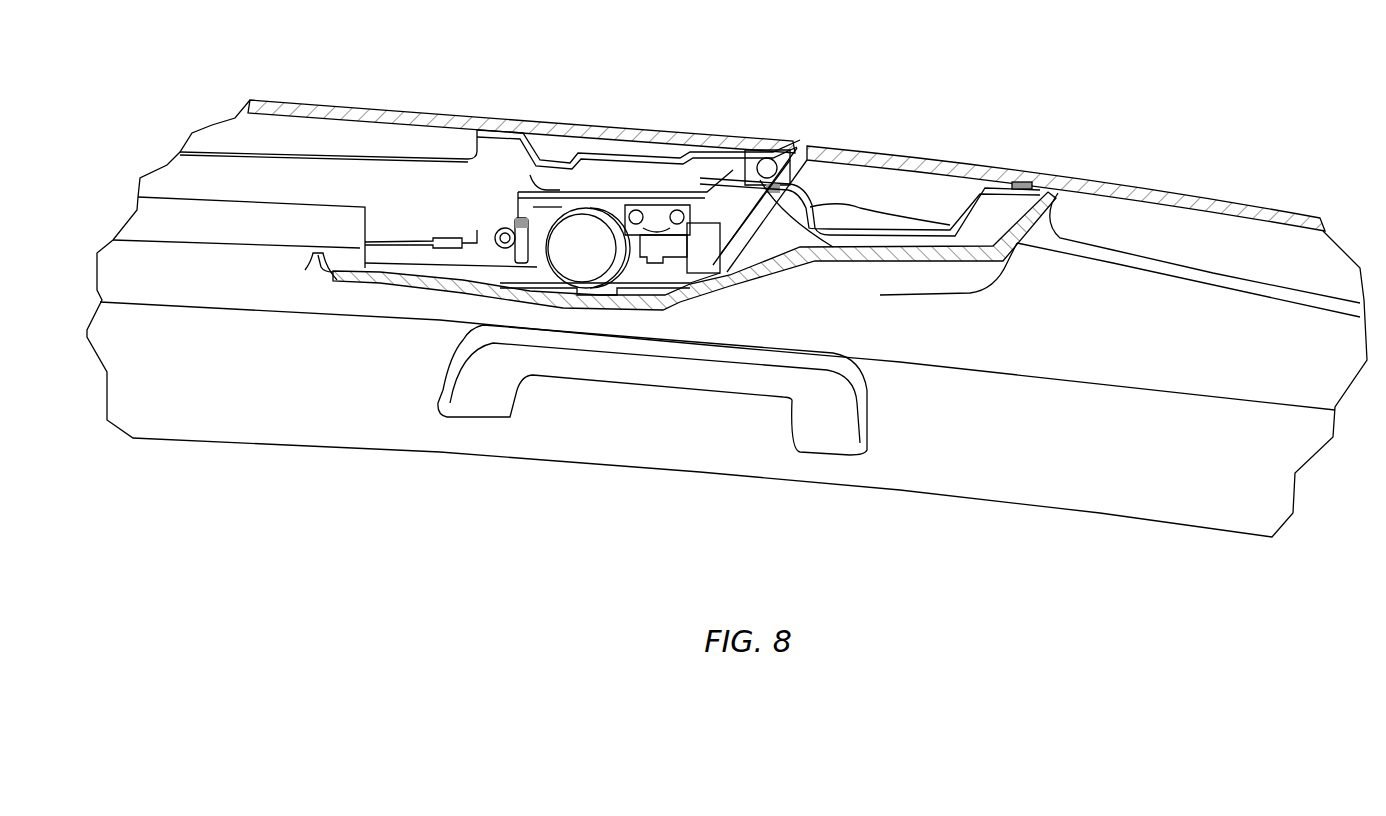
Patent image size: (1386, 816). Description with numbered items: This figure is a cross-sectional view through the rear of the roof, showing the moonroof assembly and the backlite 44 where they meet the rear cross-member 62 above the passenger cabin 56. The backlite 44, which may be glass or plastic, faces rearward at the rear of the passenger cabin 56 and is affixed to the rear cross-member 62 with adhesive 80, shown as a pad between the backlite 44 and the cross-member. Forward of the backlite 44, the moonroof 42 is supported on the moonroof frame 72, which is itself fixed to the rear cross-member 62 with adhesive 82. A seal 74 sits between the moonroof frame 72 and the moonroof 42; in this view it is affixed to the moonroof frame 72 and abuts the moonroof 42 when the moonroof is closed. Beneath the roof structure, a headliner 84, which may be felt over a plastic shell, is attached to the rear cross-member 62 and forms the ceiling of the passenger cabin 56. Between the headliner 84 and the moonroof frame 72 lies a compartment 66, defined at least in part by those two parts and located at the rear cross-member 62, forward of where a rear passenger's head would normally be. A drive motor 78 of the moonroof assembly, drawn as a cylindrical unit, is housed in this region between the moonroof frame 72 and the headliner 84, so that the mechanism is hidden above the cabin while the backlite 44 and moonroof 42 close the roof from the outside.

The moonroof 42 is at (358, 105).
The backlite 44 is at (1123, 187).
The passenger cabin 56 is at (300, 382).
The rear cross-member 62 is at (913, 227).
The compartment 66 is at (670, 297).
The moonroof frame 72 is at (618, 192).
The seal 74 is at (760, 185).
The drive motor 78 is at (577, 310).
The adhesive 80 is at (1023, 182).
The adhesive 82 is at (800, 185).
The headliner 84 is at (693, 290).